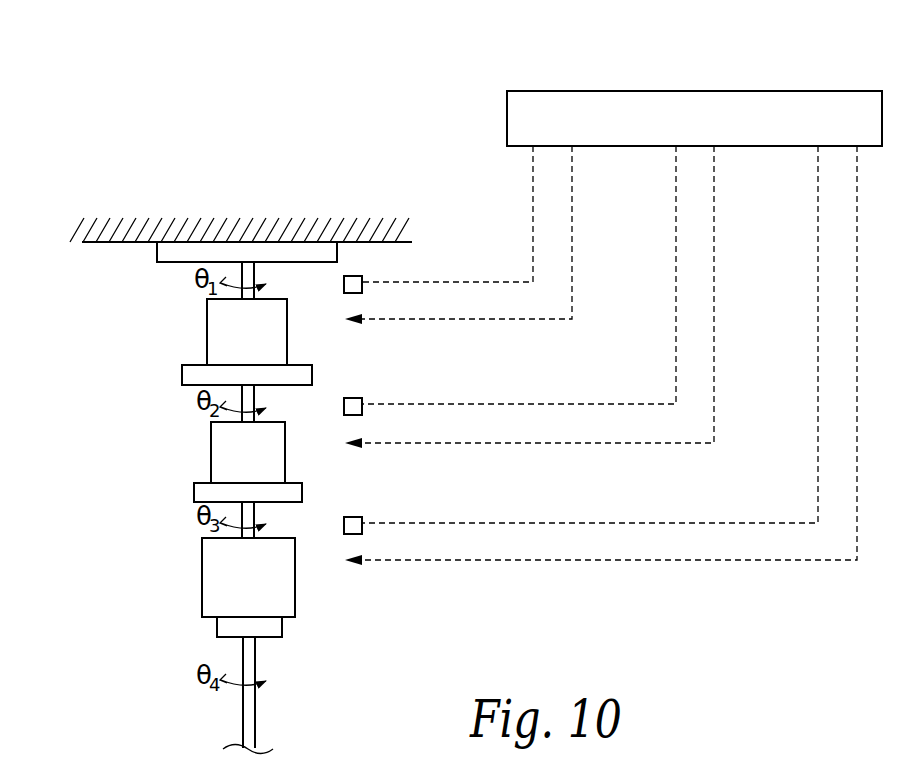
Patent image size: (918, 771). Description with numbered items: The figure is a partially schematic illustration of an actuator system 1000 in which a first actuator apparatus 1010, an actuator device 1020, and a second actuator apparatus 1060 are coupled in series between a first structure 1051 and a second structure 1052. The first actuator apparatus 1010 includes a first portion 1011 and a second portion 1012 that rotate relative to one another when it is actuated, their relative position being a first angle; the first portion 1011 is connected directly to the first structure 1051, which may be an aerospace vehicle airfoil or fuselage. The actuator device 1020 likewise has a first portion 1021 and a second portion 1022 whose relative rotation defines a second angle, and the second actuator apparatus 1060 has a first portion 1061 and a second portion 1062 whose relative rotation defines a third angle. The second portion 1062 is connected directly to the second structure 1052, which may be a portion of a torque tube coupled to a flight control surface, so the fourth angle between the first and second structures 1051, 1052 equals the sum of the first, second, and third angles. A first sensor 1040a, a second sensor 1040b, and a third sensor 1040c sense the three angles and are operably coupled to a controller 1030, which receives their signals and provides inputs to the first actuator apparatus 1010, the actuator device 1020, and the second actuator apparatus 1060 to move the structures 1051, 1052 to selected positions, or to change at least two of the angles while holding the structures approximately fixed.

The actuator system 1000 is at (300, 84).
The first actuator apparatus 1010 is at (123, 361).
The first portion 1011 is at (167, 263).
The second portion 1012 is at (207, 336).
The actuator device 1020 is at (128, 488).
The first portion 1021 is at (182, 376).
The second portion 1022 is at (211, 460).
The controller 1030 is at (722, 91).
The first sensor 1040a is at (360, 275).
The second sensor 1040b is at (358, 397).
The third sensor 1040c is at (358, 516).
The first structure 1051 is at (222, 236).
The second structure 1052 is at (243, 727).
The second actuator apparatus 1060 is at (158, 612).
The first portion 1061 is at (194, 490).
The second portion 1062 is at (295, 582).